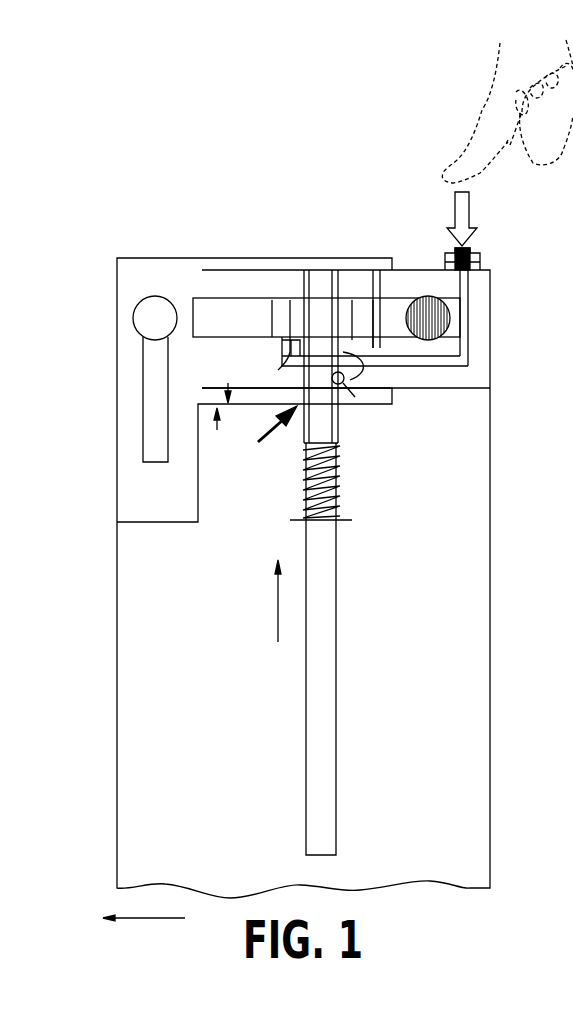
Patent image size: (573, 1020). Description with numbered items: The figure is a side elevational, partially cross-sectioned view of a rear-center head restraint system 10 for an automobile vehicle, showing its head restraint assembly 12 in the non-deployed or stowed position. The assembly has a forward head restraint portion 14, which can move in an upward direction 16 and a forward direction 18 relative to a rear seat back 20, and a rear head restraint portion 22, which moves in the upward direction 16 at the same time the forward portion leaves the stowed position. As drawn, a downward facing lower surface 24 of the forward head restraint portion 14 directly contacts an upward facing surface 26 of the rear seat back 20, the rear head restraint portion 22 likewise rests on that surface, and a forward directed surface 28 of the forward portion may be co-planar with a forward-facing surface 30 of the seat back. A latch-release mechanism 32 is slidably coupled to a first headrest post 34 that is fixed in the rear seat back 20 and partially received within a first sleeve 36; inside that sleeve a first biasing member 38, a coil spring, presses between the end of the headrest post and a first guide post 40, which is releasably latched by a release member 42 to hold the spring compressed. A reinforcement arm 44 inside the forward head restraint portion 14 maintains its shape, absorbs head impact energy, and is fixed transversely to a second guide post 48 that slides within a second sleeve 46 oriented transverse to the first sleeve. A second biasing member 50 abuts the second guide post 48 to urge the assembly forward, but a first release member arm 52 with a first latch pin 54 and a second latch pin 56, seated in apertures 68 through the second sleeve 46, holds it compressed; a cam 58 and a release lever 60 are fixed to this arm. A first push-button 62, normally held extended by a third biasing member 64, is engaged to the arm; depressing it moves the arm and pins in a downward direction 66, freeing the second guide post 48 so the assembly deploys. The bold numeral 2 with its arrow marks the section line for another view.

The rear-center head restraint system 10 is at (218, 147).
The head restraint assembly 12 is at (90, 259).
The forward head restraint portion 14 is at (128, 385).
The upward direction 16 is at (278, 612).
The forward direction 18 is at (152, 918).
The rear seat back 20 is at (136, 696).
The rear head restraint portion 22 is at (478, 280).
The downward facing lower surface 24 is at (217, 430).
The upward facing surface 26 is at (228, 383).
The forward directed surface 28 is at (106, 321).
The forward-facing surface 30 is at (107, 584).
The latch-release mechanism 32 is at (490, 350).
The first headrest post 34 is at (328, 740).
The first sleeve 36 is at (340, 408).
The first biasing member 38 is at (342, 497).
The first guide post 40 is at (300, 440).
The release member 42 is at (343, 383).
The reinforcement arm 44 is at (148, 433).
The second sleeve 46 is at (237, 298).
The second guide post 48 is at (181, 298).
The second biasing member 50 is at (436, 298).
The first release member arm 52 is at (445, 366).
The first latch pin 54 is at (272, 300).
The second latch pin 56 is at (373, 300).
The cam 58 is at (352, 300).
The release lever 60 is at (463, 316).
The first push-button 62 is at (470, 250).
The third biasing member 64 is at (483, 262).
The downward direction 66 is at (459, 222).
The apertures 68 is at (290, 300).
The section line of FIG. 2 is at (258, 442).